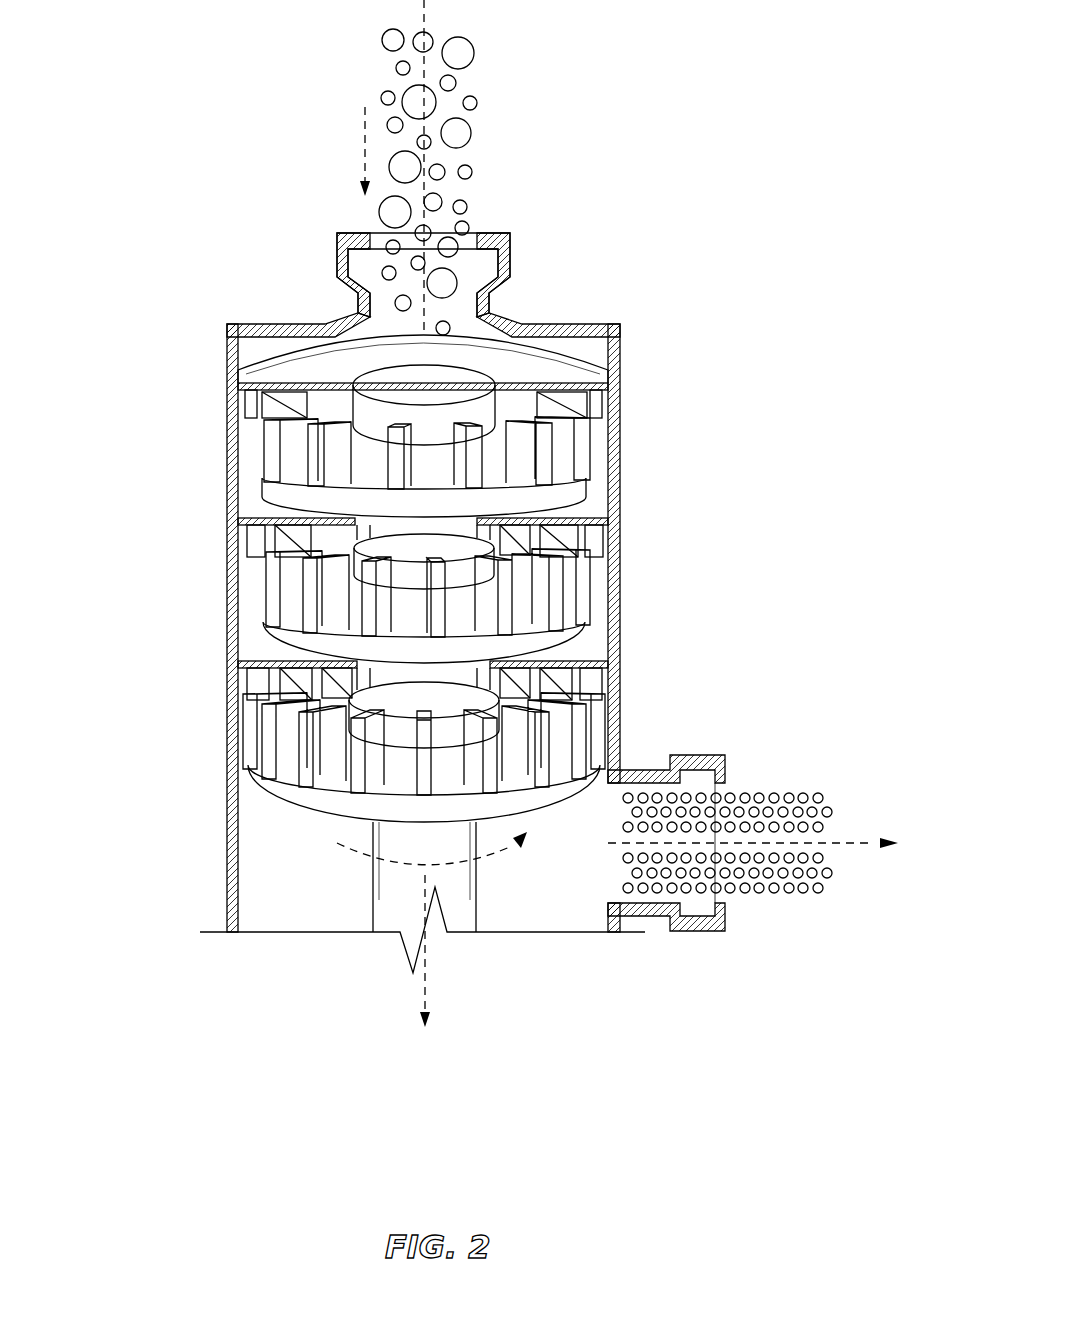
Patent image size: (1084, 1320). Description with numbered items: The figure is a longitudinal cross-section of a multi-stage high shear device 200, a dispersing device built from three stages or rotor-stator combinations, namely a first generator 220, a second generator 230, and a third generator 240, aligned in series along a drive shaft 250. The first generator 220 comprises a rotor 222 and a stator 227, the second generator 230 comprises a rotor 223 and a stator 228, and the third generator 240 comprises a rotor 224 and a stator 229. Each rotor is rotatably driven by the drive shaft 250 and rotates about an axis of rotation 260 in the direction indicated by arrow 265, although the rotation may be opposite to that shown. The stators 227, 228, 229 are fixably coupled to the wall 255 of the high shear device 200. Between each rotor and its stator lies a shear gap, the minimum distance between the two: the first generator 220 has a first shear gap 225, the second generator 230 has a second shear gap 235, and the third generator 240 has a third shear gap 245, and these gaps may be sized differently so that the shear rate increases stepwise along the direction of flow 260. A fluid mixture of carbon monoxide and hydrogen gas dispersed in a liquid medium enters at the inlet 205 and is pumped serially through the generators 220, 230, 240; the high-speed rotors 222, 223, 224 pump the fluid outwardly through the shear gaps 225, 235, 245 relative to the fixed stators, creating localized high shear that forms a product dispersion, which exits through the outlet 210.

The high shear device 200 is at (158, 186).
The inlet 205 is at (472, 222).
The outlet 210 is at (843, 852).
The first generator 220 is at (220, 385).
The rotor 222 is at (595, 430).
The rotor 223 is at (593, 568).
The rotor 224 is at (606, 710).
The first shear gap 225 is at (506, 416).
The stator 227 is at (576, 374).
The stator 228 is at (578, 506).
The stator 229 is at (578, 645).
The second generator 230 is at (220, 522).
The second shear gap 235 is at (508, 545).
The third generator 240 is at (220, 663).
The third shear gap 245 is at (506, 687).
The drive shaft 250 is at (383, 908).
The wall 255 is at (226, 330).
The axis of rotation 260 is at (418, 988).
The arrow 265 is at (490, 860).